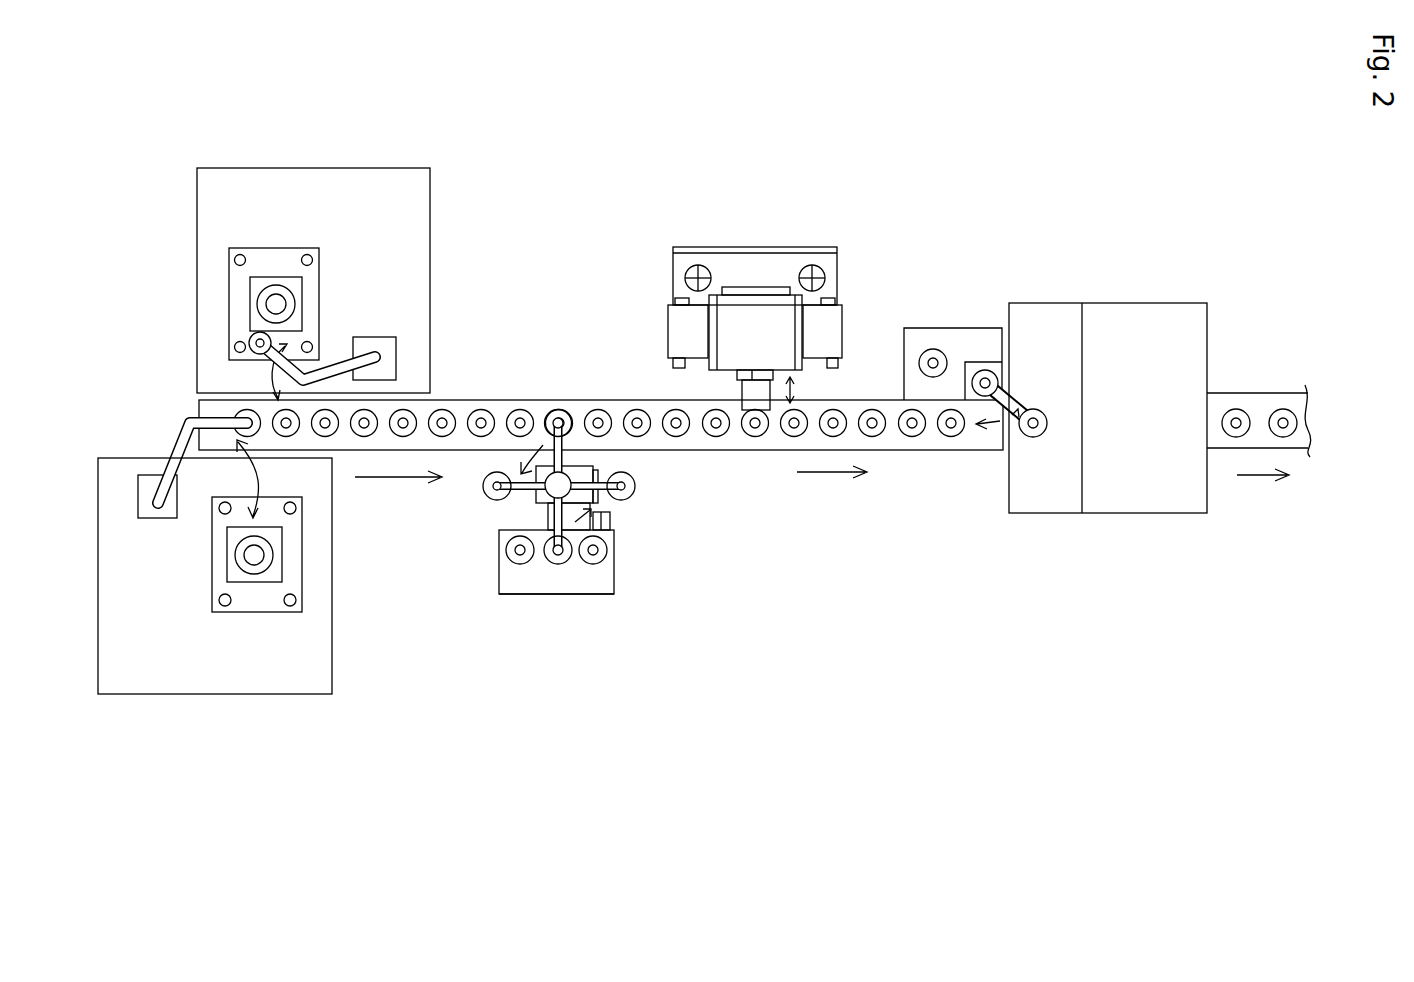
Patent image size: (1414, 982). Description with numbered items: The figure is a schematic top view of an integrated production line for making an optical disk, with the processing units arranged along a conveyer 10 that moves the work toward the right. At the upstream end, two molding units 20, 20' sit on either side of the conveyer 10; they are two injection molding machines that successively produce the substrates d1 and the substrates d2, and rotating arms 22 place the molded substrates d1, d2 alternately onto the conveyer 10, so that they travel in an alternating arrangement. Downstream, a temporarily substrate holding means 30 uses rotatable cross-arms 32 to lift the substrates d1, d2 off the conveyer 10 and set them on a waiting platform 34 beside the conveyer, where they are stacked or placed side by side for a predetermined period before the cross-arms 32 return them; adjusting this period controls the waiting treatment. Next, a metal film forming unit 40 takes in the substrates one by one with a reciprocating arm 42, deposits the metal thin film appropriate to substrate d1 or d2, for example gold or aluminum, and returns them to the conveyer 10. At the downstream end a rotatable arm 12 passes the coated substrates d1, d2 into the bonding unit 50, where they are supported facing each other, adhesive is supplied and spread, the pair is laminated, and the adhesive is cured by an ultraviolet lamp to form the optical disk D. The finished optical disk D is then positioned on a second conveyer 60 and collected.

The conveyer 10 is at (612, 405).
The rotatable arm 12 is at (1017, 405).
The molding unit 20 is at (287, 284).
The molding unit 20' is at (251, 567).
The rotating arm 22 is at (342, 360).
The temporarily substrate holding means 30 is at (615, 553).
The rotatable cross-arms 32 is at (522, 490).
The waiting platform 34 is at (582, 578).
The metal film forming unit 40 is at (820, 247).
The reciprocating arm 42 is at (740, 395).
The bonding unit 50 is at (1117, 303).
The conveyer 60 is at (1273, 393).
The substrate d1 is at (235, 412).
The substrate d2 is at (250, 340).
The optical disk D is at (1293, 440).